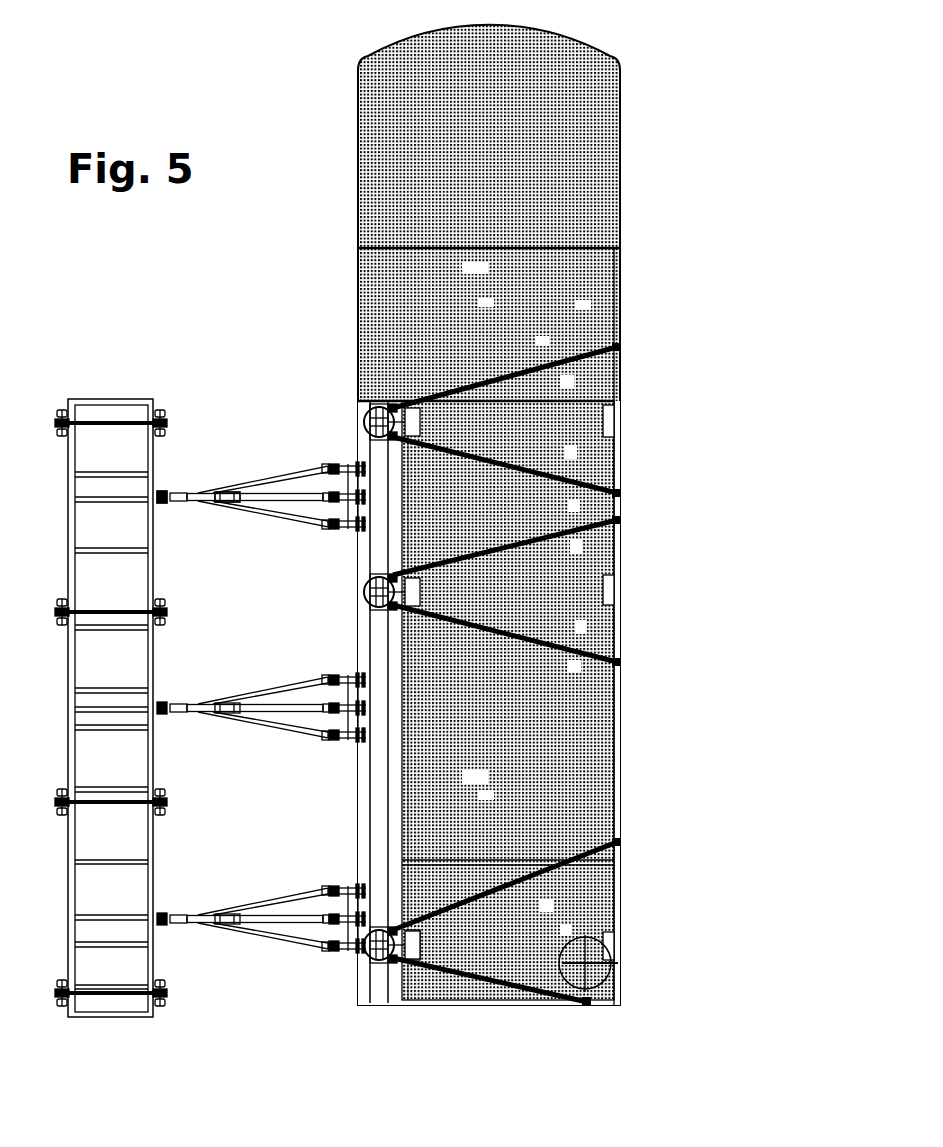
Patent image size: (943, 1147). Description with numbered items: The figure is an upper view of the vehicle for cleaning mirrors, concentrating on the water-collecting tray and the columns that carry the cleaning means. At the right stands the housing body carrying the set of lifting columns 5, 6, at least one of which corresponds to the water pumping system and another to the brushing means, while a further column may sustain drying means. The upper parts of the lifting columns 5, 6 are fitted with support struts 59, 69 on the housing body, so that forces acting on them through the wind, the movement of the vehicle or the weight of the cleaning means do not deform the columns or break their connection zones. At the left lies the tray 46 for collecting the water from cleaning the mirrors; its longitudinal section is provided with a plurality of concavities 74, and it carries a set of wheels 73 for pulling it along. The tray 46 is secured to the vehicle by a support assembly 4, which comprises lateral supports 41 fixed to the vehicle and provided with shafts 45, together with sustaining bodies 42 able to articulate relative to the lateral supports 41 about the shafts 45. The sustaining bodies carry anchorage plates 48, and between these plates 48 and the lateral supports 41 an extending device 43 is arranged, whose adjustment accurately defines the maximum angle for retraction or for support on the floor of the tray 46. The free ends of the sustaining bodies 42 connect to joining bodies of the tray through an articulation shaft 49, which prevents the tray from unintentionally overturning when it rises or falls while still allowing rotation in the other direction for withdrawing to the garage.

The support assembly 4 is at (283, 742).
The lifting column 5 is at (364, 414).
The lifting column 6 is at (362, 956).
The lateral support 41 is at (300, 932).
The sustaining body 42 is at (290, 479).
The extending device 43 is at (257, 493).
The shaft 45 is at (345, 468).
The tray 46 is at (107, 396).
The anchorage plate 48 is at (227, 492).
The articulation shaft 49 is at (162, 493).
The support strut 59 is at (560, 366).
The support strut 69 is at (540, 877).
The wheel 73 is at (163, 416).
The concavity 74 is at (93, 763).